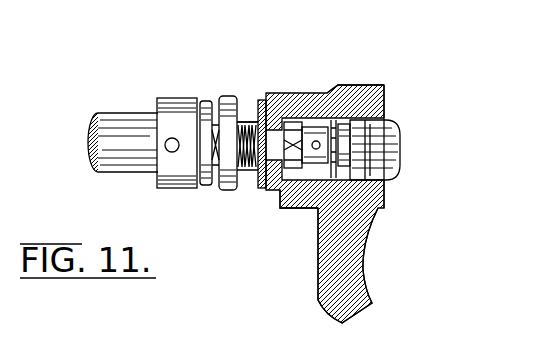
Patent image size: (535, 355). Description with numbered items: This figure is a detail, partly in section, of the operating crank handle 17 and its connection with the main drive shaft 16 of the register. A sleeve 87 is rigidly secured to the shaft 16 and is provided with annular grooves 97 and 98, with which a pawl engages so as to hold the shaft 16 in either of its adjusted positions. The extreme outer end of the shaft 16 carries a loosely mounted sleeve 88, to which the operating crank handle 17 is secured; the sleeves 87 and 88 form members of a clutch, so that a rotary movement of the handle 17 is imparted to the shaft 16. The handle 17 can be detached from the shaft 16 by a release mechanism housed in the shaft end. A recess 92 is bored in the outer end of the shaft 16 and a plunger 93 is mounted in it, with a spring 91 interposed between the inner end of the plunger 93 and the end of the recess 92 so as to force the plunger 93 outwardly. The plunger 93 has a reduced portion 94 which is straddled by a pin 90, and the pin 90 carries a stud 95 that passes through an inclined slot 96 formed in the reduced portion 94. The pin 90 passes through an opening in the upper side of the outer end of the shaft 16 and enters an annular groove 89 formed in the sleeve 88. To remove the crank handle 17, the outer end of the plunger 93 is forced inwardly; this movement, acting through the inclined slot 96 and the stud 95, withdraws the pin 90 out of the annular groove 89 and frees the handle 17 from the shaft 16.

The main drive shaft 16 is at (148, 113).
The annular groove 97 is at (196, 99).
The annular groove 98 is at (222, 98).
The sleeve 87 is at (232, 98).
The sleeve 88 is at (261, 100).
The annular groove 89 is at (368, 110).
The stud 95 is at (343, 88).
The pin 90 is at (386, 107).
The plunger 93 is at (402, 158).
The reduced portion 94 is at (384, 188).
The spring 91 is at (298, 200).
The recess 92 is at (248, 170).
The inclined slot 96 is at (318, 193).
The operating crank handle 17 is at (366, 283).